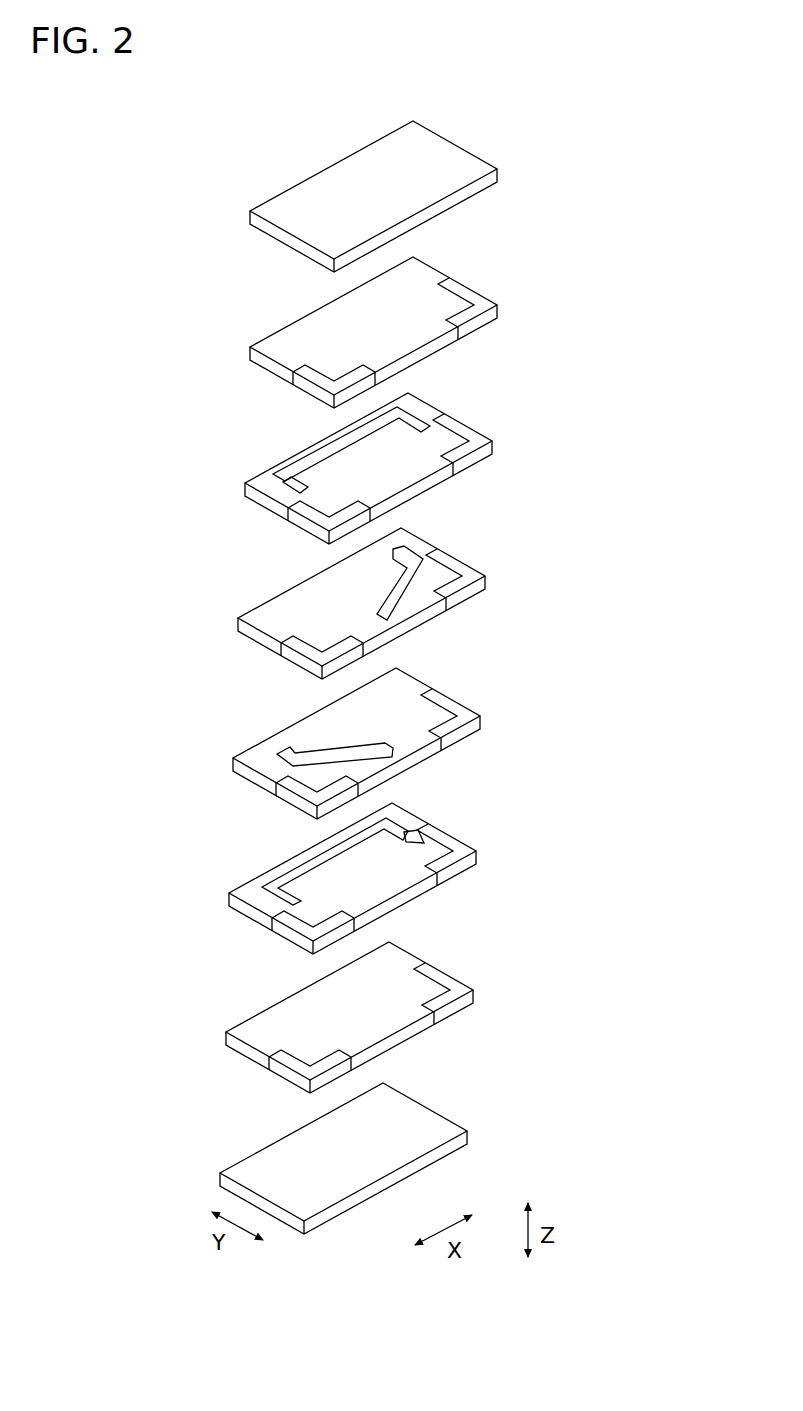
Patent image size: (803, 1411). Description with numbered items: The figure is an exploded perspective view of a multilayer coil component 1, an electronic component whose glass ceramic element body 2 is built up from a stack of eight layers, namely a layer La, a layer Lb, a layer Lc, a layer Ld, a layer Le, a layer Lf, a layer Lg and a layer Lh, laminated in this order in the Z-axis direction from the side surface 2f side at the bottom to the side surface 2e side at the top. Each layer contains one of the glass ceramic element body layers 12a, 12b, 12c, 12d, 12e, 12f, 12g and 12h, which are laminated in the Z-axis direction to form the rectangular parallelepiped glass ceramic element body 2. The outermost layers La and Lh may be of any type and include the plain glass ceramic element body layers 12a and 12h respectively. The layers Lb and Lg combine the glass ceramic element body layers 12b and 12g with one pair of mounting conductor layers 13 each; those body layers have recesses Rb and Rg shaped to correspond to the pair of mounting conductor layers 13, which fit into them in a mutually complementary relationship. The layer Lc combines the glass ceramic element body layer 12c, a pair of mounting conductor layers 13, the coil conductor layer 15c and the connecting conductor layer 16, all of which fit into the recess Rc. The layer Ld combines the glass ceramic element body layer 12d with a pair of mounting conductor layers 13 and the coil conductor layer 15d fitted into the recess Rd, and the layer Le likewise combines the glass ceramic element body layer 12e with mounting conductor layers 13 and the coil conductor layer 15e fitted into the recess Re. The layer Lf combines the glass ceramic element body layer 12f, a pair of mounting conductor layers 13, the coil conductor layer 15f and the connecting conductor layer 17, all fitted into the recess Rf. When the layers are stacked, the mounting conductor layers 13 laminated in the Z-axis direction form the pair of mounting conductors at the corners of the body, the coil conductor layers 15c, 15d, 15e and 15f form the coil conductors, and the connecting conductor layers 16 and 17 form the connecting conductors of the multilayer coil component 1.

The multilayer coil component 1 is at (632, 117).
The glass ceramic element body 2 is at (87, 1202).
The side surface 2e is at (317, 187).
The side surface 2f is at (367, 1167).
The glass ceramic element body layer 12a is at (220, 1173).
The glass ceramic element body layer 12b is at (226, 1032).
The glass ceramic element body layer 12c is at (229, 893).
The glass ceramic element body layer 12d is at (233, 758).
The glass ceramic element body layer 12e is at (238, 618).
The glass ceramic element body layer 12f is at (245, 483).
The glass ceramic element body layer 12g is at (250, 347).
The glass ceramic element body layer 12h is at (250, 212).
The mounting conductor layer 13 is at (474, 318).
The coil conductor layer 15c is at (390, 816).
The coil conductor layer 15d is at (308, 757).
The coil conductor layer 15e is at (425, 548).
The coil conductor layer 15f is at (290, 456).
The connecting conductor layer 16 is at (427, 843).
The connecting conductor layer 17 is at (288, 508).
The layer La is at (482, 1132).
The layer Lb is at (485, 997).
The layer Lc is at (490, 857).
The layer Ld is at (497, 717).
The layer Le is at (499, 580).
The layer Lf is at (505, 446).
The layer Lg is at (510, 305).
The layer Lh is at (515, 147).
The recess Rb is at (410, 1009).
The recess Rc is at (330, 870).
The recess Rd is at (355, 805).
The recess Re is at (376, 601).
The recess Rf is at (426, 462).
The recess Rg is at (438, 320).